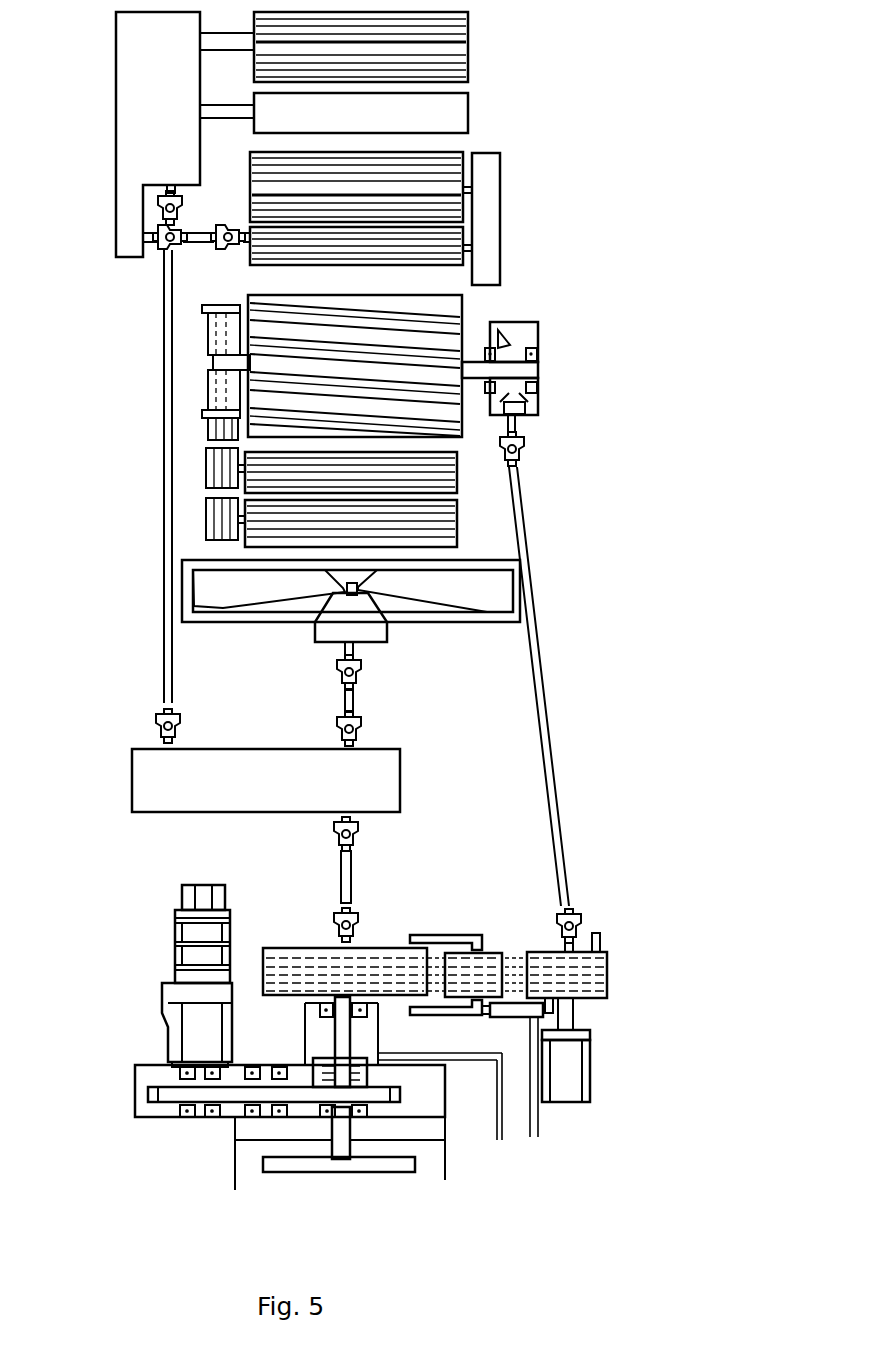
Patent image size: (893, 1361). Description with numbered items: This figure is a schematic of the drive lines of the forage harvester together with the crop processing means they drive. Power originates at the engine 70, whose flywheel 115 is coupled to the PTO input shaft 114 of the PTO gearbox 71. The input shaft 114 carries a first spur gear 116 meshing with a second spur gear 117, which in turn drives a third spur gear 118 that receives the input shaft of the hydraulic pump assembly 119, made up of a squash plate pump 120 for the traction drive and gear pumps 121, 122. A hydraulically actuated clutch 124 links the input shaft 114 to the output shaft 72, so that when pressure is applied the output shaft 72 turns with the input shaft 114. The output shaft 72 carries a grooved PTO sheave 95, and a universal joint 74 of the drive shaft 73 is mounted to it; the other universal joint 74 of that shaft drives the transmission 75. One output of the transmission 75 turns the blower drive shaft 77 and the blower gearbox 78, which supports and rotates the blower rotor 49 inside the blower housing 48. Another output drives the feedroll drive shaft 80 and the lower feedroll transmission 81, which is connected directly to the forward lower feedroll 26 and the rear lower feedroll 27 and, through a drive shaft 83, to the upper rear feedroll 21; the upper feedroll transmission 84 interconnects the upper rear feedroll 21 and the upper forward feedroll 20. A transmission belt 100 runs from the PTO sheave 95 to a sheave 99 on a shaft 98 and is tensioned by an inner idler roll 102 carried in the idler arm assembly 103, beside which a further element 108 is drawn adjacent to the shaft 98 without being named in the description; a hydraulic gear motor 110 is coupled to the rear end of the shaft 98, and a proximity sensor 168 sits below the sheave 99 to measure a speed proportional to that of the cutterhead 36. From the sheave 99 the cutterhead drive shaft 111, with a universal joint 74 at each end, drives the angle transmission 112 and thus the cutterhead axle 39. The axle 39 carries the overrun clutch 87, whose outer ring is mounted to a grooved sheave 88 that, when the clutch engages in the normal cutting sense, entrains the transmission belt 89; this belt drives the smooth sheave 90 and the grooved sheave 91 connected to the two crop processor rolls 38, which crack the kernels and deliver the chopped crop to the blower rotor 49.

The upper forward feedroll 20 is at (265, 178).
The upper rear feedroll 21 is at (388, 248).
The forward lower feedroll 26 is at (458, 48).
The rear lower feedroll 27 is at (450, 112).
The cutterhead 36 is at (455, 302).
The crop processor rolls 38 is at (455, 470).
The cutterhead axle 39 is at (535, 371).
The blower housing 48 is at (512, 622).
The blower rotor 49 is at (435, 590).
The engine 70 is at (240, 1160).
The PTO gearbox 71 is at (133, 1088).
The output shaft 72 is at (342, 1003).
The drive shaft 73 is at (351, 880).
The universal joint 74 is at (527, 447).
The transmission 75 is at (128, 762).
The blower drive shaft 77 is at (360, 701).
The blower gearbox 78 is at (330, 632).
The feedroll drive shaft 80 is at (163, 438).
The lower feedroll transmission 81 is at (131, 103).
The drive shaft 83 is at (182, 250).
The upper feedroll transmission 84 is at (488, 225).
The overrun clutch 87 is at (210, 358).
The grooved sheave 88 is at (203, 415).
The transmission belt 89 is at (205, 430).
The smooth sheave 90 is at (205, 470).
The grooved sheave 91 is at (205, 523).
The PTO sheave 95 is at (285, 948).
The shaft 98 is at (573, 1010).
The sheave 99 is at (607, 975).
The transmission belt 100 is at (515, 952).
The inner idler roll 102 is at (492, 957).
The idler arm assembly 103 is at (445, 935).
The cylinder 108 is at (502, 1017).
The hydraulic gear motor 110 is at (585, 1066).
The cutterhead drive shaft 111 is at (560, 746).
The angle transmission 112 is at (538, 400).
The PTO input shaft 114 is at (338, 1150).
The flywheel 115 is at (285, 1166).
The first spur gear 116 is at (400, 1100).
The second spur gear 117 is at (248, 1048).
The third spur gear 118 is at (166, 1066).
The hydraulic pump assembly 119 is at (130, 973).
The squash plate pump 120 is at (160, 1008).
The gear pump 121 is at (173, 935).
The gear pump 122 is at (180, 897).
The hydraulically actuated clutch 124 is at (367, 1075).
The proximity sensor 168 is at (600, 942).